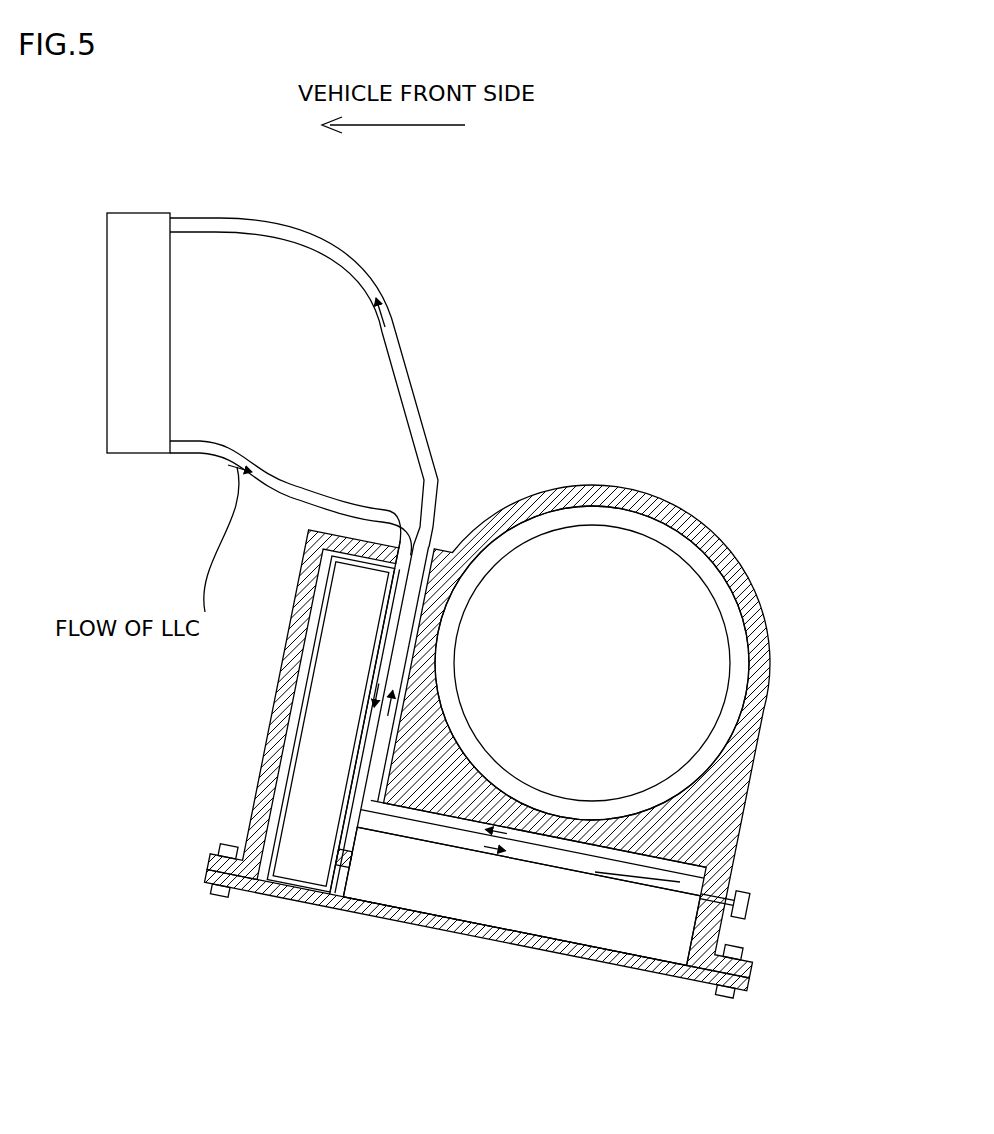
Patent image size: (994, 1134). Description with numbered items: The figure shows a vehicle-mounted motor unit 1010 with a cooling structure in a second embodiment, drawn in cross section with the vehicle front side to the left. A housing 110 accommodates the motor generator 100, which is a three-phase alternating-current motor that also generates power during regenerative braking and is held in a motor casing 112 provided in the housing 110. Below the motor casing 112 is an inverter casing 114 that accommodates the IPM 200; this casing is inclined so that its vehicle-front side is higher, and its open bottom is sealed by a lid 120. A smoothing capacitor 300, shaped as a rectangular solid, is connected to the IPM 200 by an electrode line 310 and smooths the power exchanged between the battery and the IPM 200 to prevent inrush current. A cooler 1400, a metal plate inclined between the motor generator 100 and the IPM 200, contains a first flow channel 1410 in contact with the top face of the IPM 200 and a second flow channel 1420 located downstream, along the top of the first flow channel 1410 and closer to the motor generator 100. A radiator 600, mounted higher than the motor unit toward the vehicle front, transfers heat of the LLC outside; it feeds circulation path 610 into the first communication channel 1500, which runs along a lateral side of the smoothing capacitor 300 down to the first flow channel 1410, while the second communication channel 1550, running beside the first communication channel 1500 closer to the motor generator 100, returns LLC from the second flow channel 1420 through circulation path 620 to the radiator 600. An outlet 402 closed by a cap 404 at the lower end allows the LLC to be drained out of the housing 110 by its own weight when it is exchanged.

The motor generator 100 is at (717, 607).
The housing 110 is at (610, 483).
The motor casing 112 is at (673, 540).
The inverter casing 114 is at (453, 900).
The lid 120 is at (603, 963).
The IPM 200 is at (390, 910).
The smoothing capacitor 300 is at (275, 897).
The electrode line 310 is at (330, 907).
The outlet 402 is at (732, 915).
The cap 404 is at (752, 905).
The radiator 600 is at (133, 457).
The circulation path 610 is at (215, 448).
The circulation path 620 is at (392, 327).
The motor unit 1010 is at (617, 380).
The cooler 1400 is at (556, 940).
The first flow channel 1410 is at (595, 872).
The second flow channel 1420 is at (617, 858).
The first communication channel 1500 is at (360, 733).
The second communication channel 1550 is at (386, 705).